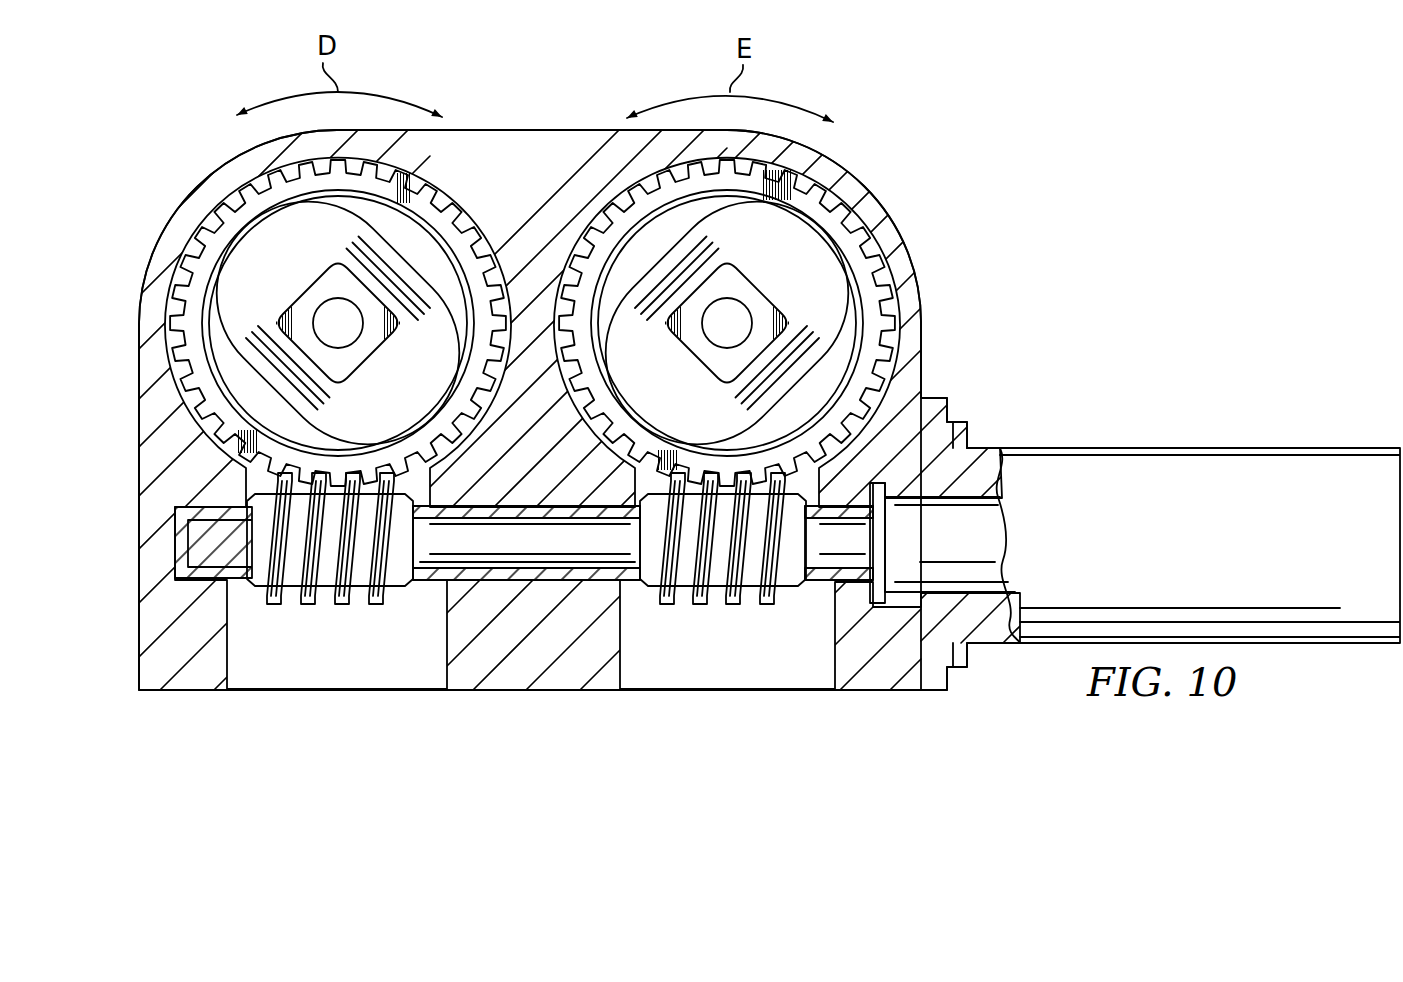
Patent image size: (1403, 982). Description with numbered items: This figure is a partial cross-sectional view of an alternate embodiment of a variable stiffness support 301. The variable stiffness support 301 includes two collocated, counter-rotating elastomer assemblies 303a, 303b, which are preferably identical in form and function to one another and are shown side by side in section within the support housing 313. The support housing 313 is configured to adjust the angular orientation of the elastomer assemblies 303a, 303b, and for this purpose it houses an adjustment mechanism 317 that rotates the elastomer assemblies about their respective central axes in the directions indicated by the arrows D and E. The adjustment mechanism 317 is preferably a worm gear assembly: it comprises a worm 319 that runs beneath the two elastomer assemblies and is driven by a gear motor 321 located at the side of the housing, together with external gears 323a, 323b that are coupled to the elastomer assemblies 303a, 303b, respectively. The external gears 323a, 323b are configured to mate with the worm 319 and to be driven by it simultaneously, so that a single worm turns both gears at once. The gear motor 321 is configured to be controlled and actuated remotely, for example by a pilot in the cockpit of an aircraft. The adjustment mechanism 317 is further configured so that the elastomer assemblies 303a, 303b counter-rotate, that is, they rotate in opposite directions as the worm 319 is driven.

The variable stiffness support 301 is at (1050, 153).
The elastomer assembly 303a is at (257, 213).
The elastomer assembly 303b is at (830, 233).
The support housing 313 is at (540, 129).
The adjustment mechanism 317 is at (298, 613).
The worm 319 is at (343, 605).
The gear motor 321 is at (1233, 447).
The external gear 323a is at (211, 251).
The external gear 323b is at (898, 288).